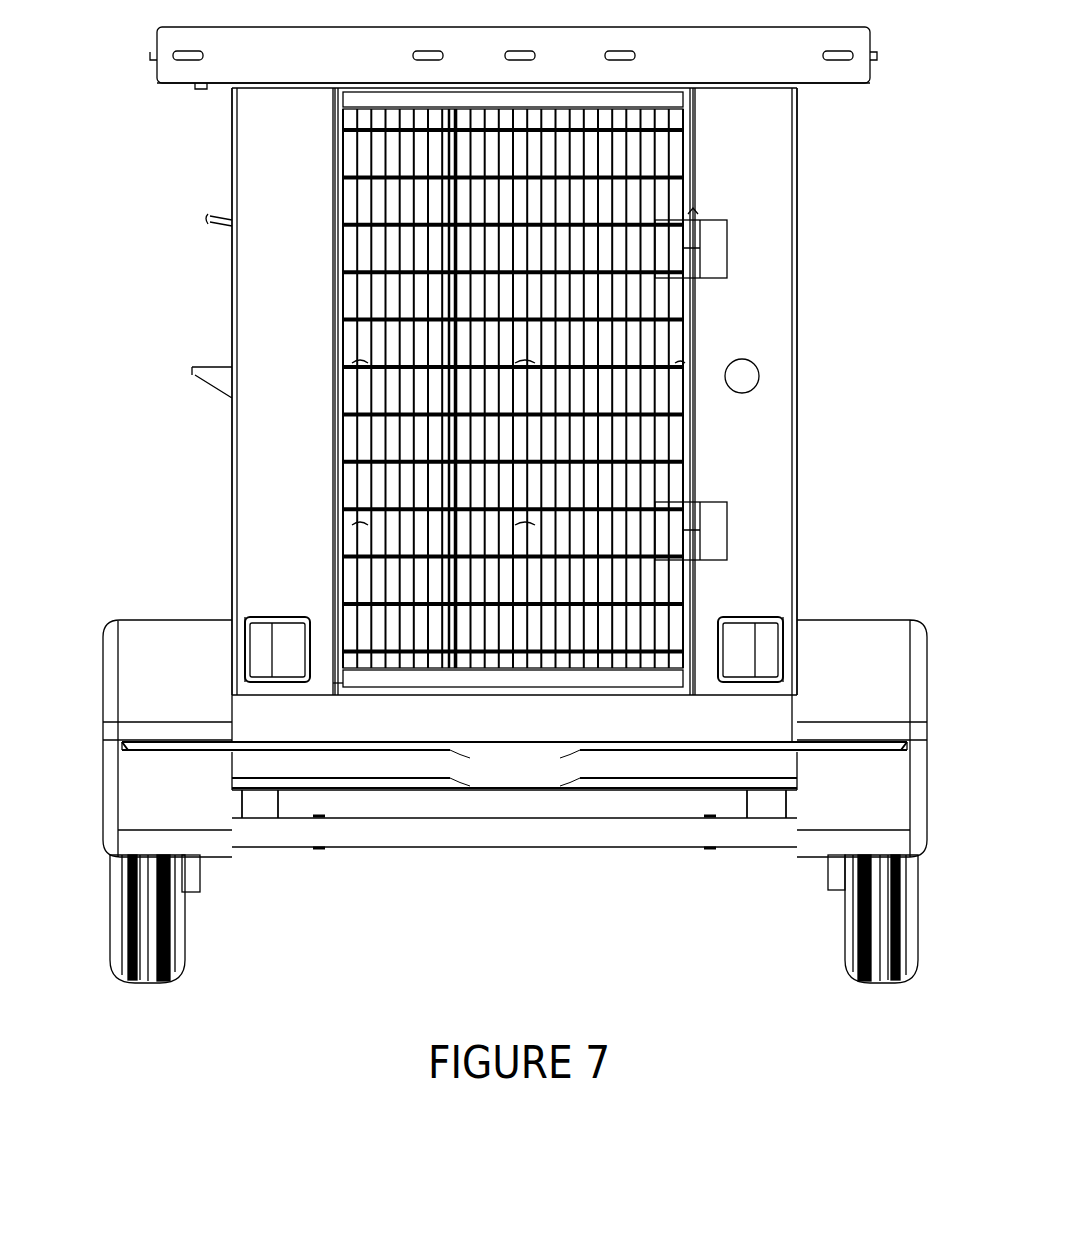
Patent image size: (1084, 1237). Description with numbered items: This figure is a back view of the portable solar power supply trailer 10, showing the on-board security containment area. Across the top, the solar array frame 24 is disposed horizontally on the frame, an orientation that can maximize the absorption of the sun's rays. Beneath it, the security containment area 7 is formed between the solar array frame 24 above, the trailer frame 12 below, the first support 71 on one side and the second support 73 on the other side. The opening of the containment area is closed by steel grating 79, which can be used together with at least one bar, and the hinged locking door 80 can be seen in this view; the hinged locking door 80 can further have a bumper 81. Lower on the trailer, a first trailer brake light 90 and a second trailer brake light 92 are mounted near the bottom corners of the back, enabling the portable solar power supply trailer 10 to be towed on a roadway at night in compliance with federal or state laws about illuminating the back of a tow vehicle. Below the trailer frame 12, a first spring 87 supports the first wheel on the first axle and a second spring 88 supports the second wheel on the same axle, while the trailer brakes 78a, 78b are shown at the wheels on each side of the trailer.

The portable solar power supply trailer 10 is at (515, 515).
The trailer frame 12 is at (517, 768).
The solar array frame 24 is at (725, 45).
The security containment area 7 is at (518, 391).
The first support 71 is at (258, 262).
The second support 73 is at (772, 263).
The steel grating 79 is at (360, 435).
The hinged locking door 80 is at (340, 340).
The bumper 81 is at (747, 370).
The first spring 87 is at (264, 810).
The second spring 88 is at (765, 810).
The first trailer brake light 90 is at (286, 640).
The second trailer brake light 92 is at (742, 640).
The trailer brake 78a is at (192, 878).
The trailer brake 78b is at (838, 878).